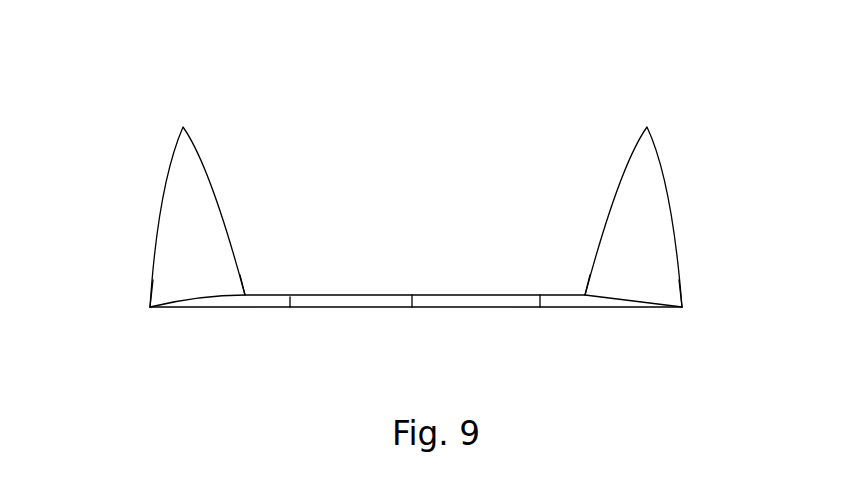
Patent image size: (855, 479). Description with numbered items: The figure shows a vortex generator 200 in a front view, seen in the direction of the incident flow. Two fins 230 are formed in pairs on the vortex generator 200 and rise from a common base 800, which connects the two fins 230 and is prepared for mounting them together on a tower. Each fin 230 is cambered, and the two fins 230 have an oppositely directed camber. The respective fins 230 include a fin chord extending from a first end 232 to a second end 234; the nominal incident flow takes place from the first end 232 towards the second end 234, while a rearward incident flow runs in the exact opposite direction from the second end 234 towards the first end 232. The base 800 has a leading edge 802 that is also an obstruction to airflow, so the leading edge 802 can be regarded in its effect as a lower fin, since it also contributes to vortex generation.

The vortex generator 200 is at (318, 140).
The fin 230 is at (198, 180).
The first end 232 is at (148, 295).
The second end 234 is at (245, 290).
The base 800 is at (362, 305).
The leading edge 802 is at (295, 303).